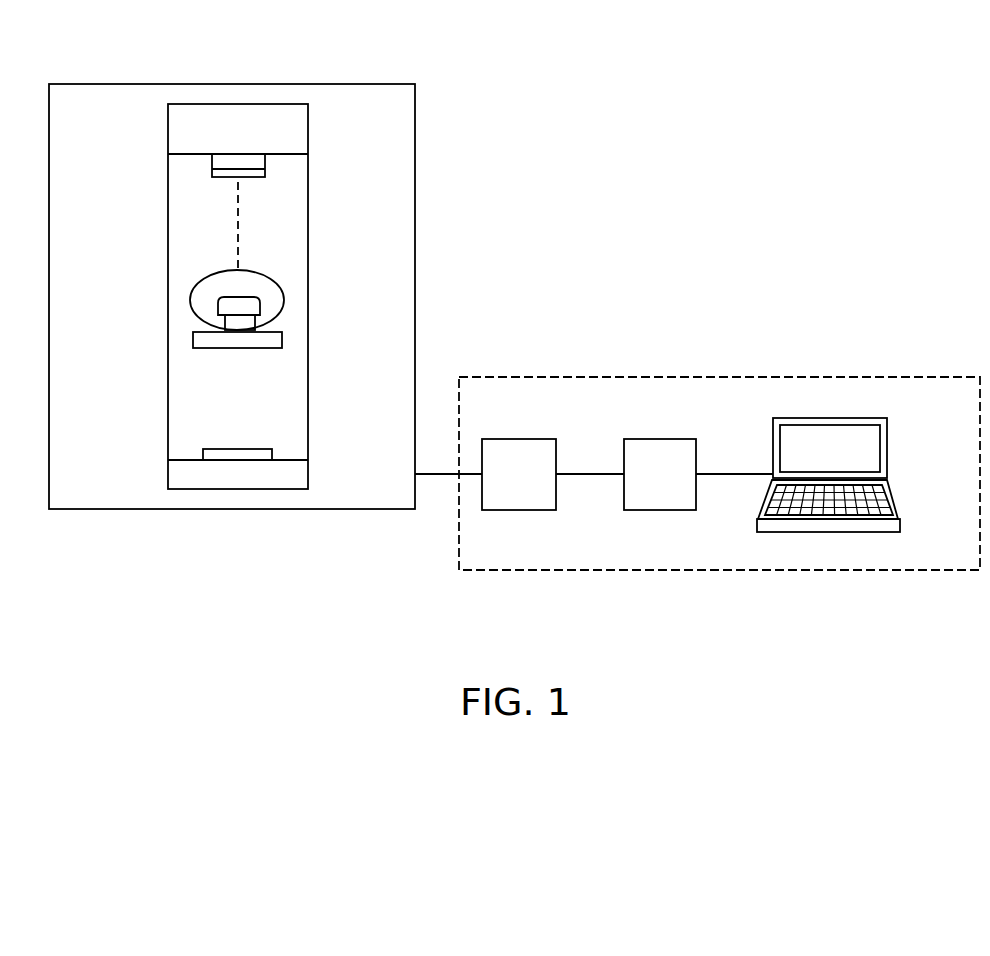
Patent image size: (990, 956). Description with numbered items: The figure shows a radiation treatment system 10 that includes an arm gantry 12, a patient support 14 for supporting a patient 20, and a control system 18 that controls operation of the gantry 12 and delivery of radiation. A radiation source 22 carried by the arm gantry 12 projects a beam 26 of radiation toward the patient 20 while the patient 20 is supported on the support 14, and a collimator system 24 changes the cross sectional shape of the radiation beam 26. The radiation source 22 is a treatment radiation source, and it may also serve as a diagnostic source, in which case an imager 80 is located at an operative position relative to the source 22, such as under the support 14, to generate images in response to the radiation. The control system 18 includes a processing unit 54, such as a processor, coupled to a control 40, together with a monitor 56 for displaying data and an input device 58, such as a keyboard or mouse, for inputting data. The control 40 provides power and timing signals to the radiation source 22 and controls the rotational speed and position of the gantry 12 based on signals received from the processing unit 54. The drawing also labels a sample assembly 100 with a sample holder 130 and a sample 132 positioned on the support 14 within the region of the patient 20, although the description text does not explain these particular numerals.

The radiation treatment system 10 is at (435, 72).
The arm gantry 12 is at (308, 199).
The patient support 14 is at (282, 343).
The control system 18 is at (648, 377).
The patient 20 is at (192, 300).
The radiation source 22 is at (265, 162).
The collimator system 24 is at (212, 177).
The radiation beam 26 is at (237, 195).
The control 40 is at (534, 487).
The processing unit 54 is at (675, 487).
The monitor 56 is at (888, 442).
The input device 58 is at (900, 515).
The imager 80 is at (254, 449).
The sample assembly 100 is at (244, 298).
The sample holder 130 is at (250, 297).
The sample 132 is at (222, 322).